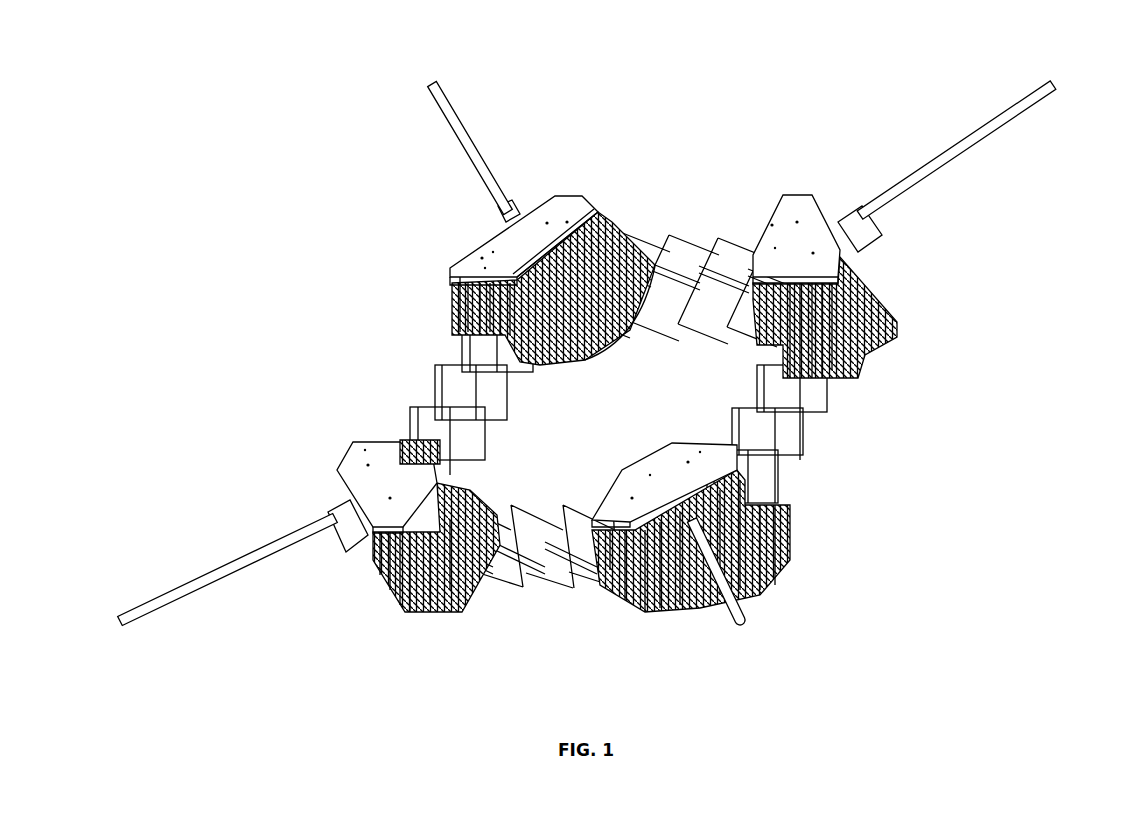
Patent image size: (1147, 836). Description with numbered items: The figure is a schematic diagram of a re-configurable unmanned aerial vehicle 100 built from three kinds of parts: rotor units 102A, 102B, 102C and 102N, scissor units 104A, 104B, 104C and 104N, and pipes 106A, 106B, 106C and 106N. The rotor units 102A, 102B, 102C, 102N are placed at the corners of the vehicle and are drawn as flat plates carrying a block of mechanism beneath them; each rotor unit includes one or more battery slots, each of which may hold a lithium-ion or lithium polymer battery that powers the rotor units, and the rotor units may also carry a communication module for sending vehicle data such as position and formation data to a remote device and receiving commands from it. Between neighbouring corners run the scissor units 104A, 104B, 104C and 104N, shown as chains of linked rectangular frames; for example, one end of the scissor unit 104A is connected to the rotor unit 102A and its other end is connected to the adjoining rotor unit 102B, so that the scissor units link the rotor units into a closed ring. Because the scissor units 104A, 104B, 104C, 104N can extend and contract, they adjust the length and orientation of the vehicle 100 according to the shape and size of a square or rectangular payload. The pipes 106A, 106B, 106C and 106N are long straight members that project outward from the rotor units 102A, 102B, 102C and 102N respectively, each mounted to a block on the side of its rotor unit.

The re-configurable unmanned aerial vehicle 100 is at (87, 92).
The rotor unit 102A is at (762, 560).
The rotor unit 102B is at (356, 441).
The rotor unit 102C is at (582, 195).
The rotor unit 102N is at (795, 196).
The scissor unit 104A is at (514, 598).
The scissor unit 104B is at (433, 364).
The scissor unit 104C is at (677, 230).
The scissor unit 104N is at (832, 418).
The pipe 106A is at (748, 620).
The pipe 106B is at (125, 628).
The pipe 106C is at (445, 98).
The pipe 106N is at (1057, 92).